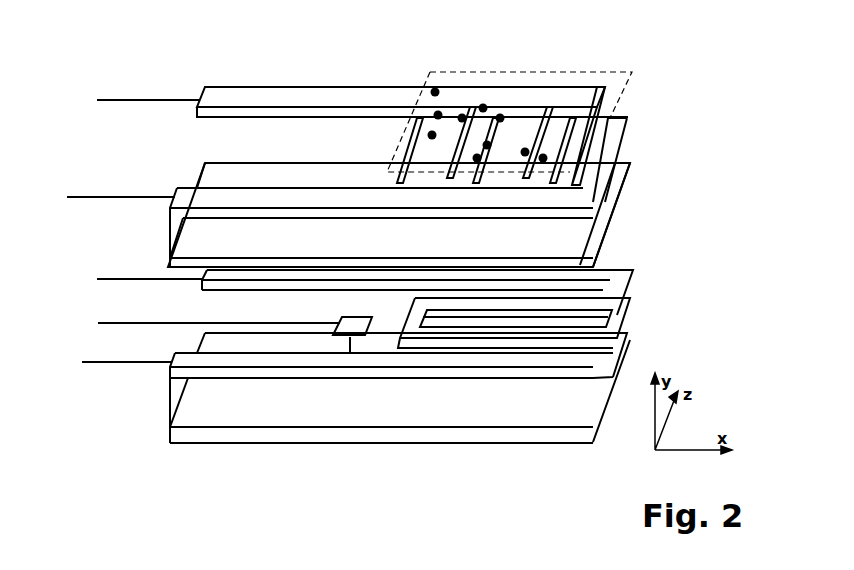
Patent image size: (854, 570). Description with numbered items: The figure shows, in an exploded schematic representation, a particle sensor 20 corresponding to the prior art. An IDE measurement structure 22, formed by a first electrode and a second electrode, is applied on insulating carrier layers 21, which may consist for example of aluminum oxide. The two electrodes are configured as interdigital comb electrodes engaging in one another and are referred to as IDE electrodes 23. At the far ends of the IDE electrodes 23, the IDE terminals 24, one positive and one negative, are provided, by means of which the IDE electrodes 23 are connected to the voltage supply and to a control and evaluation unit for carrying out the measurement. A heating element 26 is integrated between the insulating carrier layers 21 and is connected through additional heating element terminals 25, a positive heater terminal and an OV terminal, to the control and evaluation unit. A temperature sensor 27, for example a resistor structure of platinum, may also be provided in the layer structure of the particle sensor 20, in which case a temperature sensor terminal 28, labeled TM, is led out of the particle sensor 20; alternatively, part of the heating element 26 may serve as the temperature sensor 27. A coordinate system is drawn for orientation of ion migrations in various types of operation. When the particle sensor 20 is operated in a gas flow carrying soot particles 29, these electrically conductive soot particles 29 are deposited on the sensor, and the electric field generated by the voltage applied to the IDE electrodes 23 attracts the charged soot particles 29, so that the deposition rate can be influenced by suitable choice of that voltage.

The particle sensor 20 is at (655, 181).
The insulating carrier layers 21 is at (232, 172).
The IDE measurement structure 22 is at (505, 110).
The IDE electrodes 23 is at (583, 134).
The IDE terminals 24 is at (118, 100).
The heating element terminals 25 is at (118, 279).
The heating element 26 is at (627, 300).
The temperature sensor 27 is at (352, 322).
The temperature sensor terminal 28 is at (143, 325).
The soot particles 29 is at (437, 112).